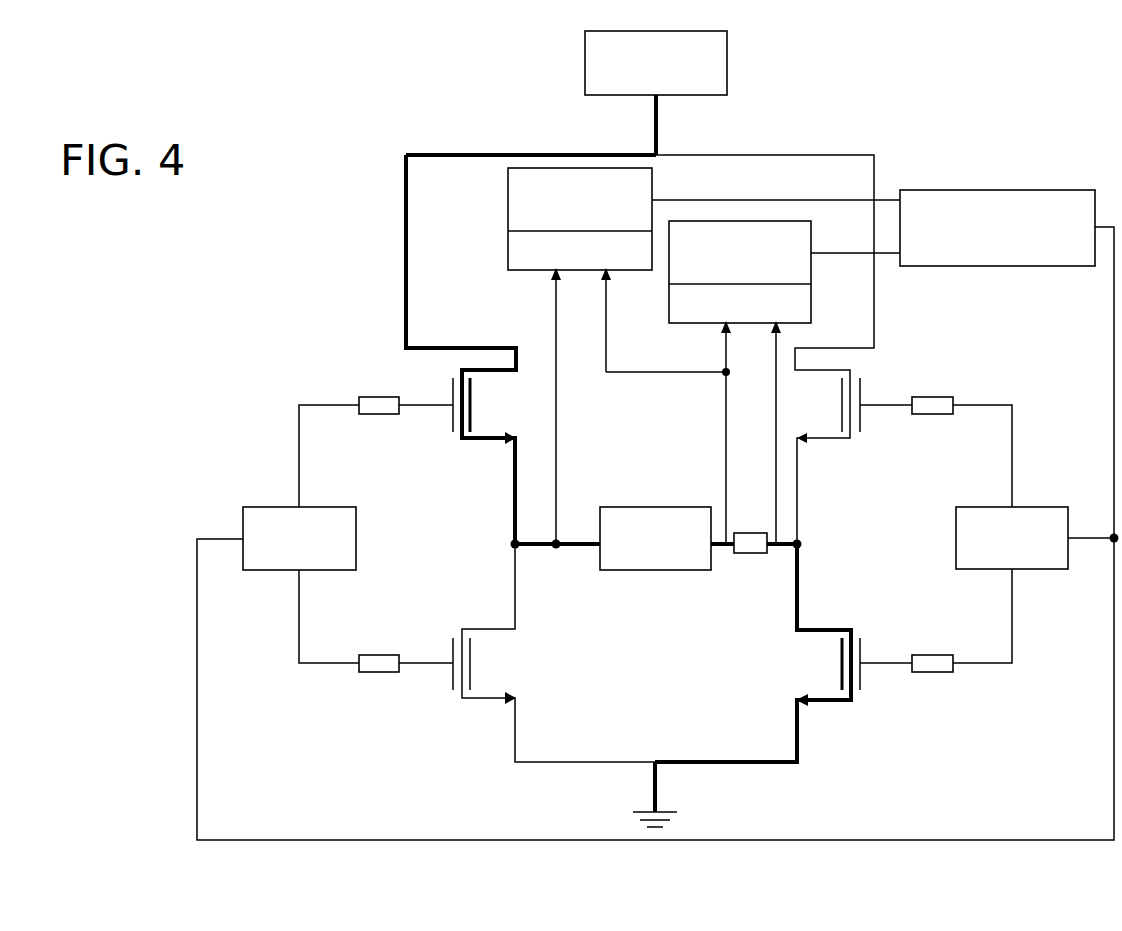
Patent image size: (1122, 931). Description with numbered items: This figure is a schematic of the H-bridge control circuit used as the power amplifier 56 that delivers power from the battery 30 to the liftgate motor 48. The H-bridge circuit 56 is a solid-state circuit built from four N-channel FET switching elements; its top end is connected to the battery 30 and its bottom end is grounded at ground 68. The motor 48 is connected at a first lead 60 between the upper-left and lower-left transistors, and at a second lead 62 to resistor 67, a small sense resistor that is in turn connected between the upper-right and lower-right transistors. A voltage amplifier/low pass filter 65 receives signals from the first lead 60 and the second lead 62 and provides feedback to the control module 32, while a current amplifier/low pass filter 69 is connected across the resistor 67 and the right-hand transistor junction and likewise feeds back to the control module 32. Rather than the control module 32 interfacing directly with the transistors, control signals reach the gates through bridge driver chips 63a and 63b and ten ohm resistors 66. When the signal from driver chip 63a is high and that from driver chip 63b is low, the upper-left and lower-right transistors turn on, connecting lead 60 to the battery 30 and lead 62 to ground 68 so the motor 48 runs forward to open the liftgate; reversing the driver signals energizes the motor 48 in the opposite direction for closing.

The battery 30 is at (585, 74).
The control module 32 is at (1018, 190).
The liftgate motor 48 is at (643, 507).
The H-bridge circuit 56 is at (458, 735).
The first lead 60 is at (600, 550).
The second lead 62 is at (712, 547).
The bridge driver chip 63a is at (956, 545).
The bridge driver chip 63b is at (356, 545).
The voltage amplifier/low pass filter 65 is at (508, 210).
The resistors 66 is at (372, 397).
The resistor 67 is at (752, 553).
The ground 68 is at (675, 812).
The current amplifier/low pass filter 69 is at (811, 305).